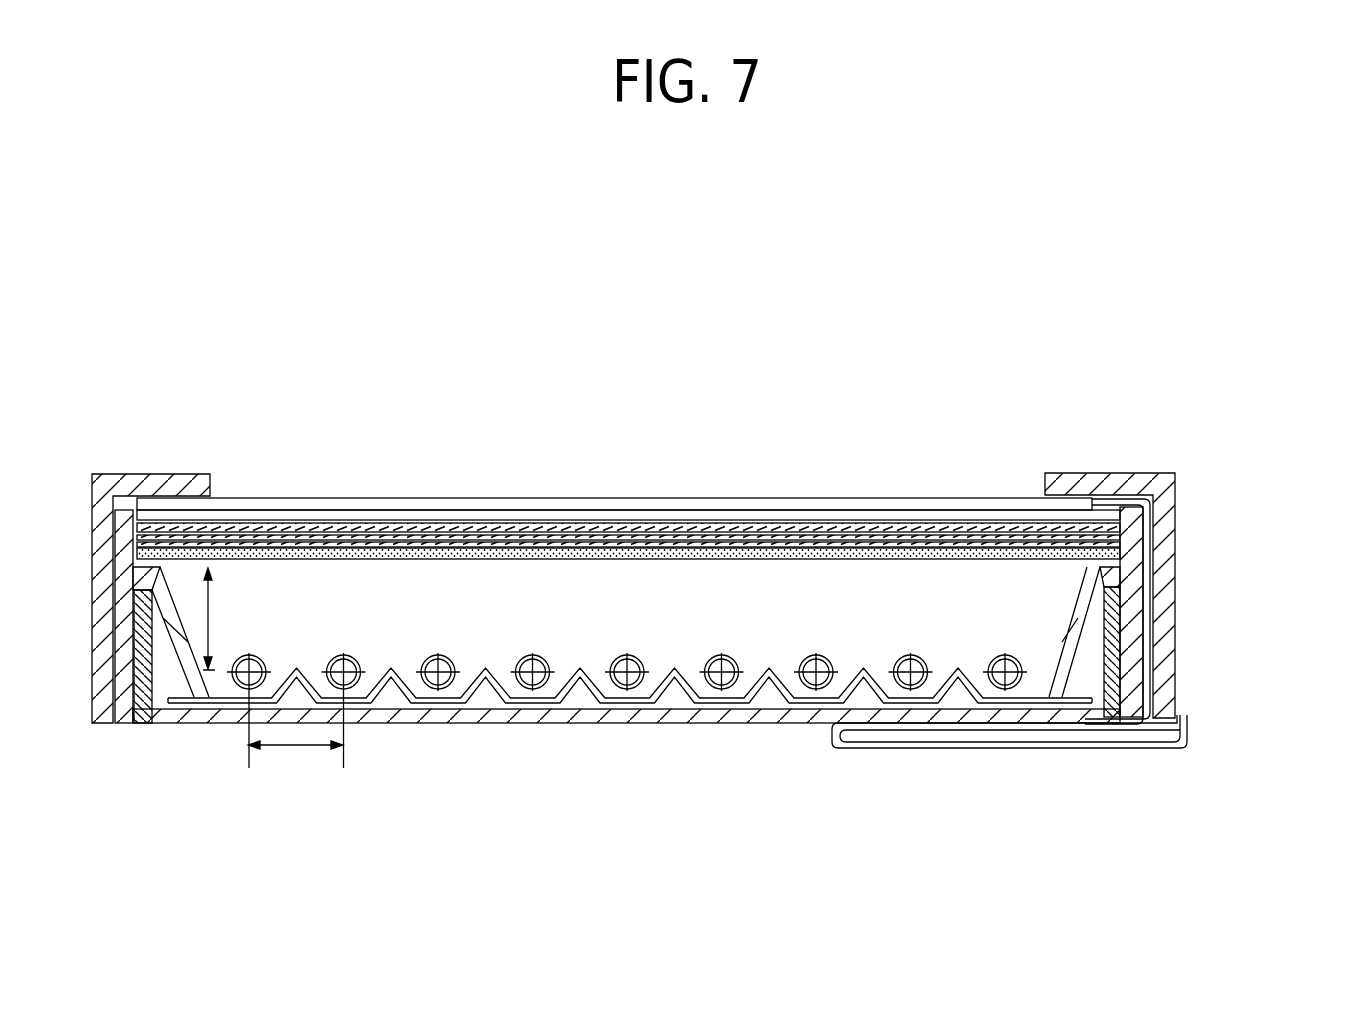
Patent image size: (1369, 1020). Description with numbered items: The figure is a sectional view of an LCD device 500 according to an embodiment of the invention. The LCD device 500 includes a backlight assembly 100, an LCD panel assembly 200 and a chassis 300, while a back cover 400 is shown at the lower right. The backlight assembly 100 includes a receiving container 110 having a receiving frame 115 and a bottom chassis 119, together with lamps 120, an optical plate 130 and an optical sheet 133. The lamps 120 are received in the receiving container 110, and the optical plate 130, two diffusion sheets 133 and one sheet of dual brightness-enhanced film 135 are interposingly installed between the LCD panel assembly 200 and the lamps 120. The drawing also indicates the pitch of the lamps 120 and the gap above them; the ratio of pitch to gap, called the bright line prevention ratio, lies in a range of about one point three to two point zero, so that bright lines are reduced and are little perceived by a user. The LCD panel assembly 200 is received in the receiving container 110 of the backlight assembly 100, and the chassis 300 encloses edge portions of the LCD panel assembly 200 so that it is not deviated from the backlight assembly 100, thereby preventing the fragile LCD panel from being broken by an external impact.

The LCD device 500 is at (1219, 366).
The chassis 300 is at (1125, 466).
The LCD panel assembly 200 is at (806, 470).
The backlight assembly 100 is at (485, 765).
The dual brightness-enhanced film 135 is at (473, 523).
The diffusion sheets 133 is at (603, 523).
The optical plate 130 is at (672, 555).
The receiving container 110 is at (1262, 576).
The receiving frame 115 is at (1160, 655).
The bottom chassis 119 is at (539, 730).
The lamps 120 is at (430, 705).
The back cover 400 is at (979, 790).